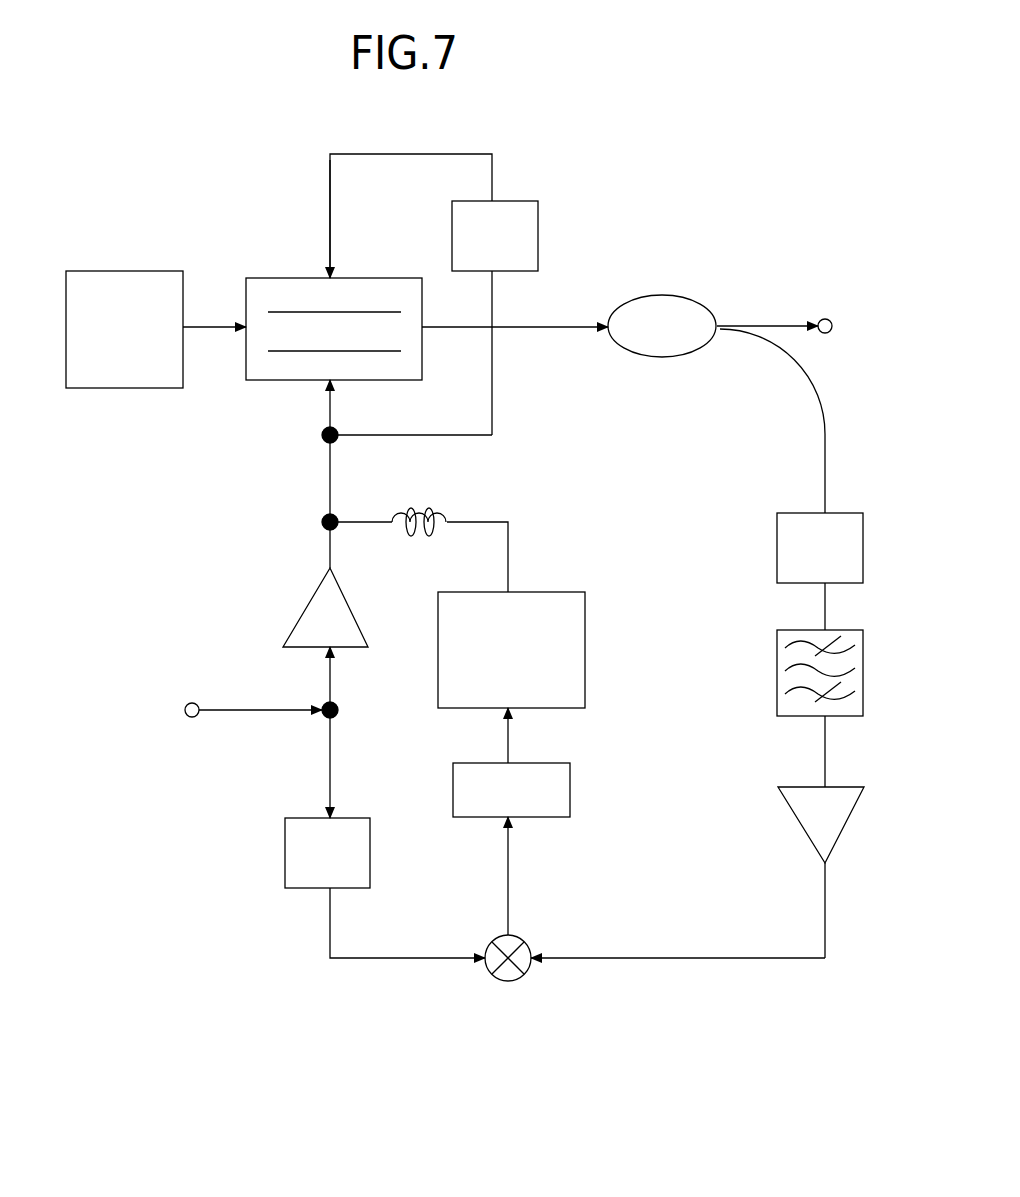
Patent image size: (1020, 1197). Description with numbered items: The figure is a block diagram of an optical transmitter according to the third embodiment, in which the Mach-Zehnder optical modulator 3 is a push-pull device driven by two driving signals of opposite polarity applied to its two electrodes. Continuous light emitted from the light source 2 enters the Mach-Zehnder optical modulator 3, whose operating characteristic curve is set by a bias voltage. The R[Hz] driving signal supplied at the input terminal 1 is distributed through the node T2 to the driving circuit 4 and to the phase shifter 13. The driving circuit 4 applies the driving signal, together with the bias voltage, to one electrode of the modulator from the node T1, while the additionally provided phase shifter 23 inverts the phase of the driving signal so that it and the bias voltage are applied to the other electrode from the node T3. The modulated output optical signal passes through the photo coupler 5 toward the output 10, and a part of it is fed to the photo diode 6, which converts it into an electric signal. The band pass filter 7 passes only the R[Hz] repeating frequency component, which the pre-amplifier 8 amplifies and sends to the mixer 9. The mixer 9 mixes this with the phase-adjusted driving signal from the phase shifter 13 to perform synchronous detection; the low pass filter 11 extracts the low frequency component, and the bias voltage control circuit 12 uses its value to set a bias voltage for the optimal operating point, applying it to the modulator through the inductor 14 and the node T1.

The input terminal 1 is at (193, 703).
The light source 2 is at (160, 272).
The Mach-Zehnder optical modulator 3 is at (397, 283).
The driving circuit 4 is at (310, 608).
The photo coupler 5 is at (678, 298).
The photo diode 6 is at (848, 517).
The band pass filter 7 is at (848, 634).
The pre-amplifier 8 is at (849, 806).
The mixer 9 is at (503, 978).
The optical output terminal 10 is at (825, 319).
The low pass filter 11 is at (551, 768).
The bias voltage control circuit 12 is at (565, 596).
The phase shifter 13 is at (300, 882).
The inductor 14 is at (432, 508).
The phase shifter 23 is at (521, 205).
The node T1 is at (318, 527).
The node T2 is at (320, 735).
The node T3 is at (318, 440).